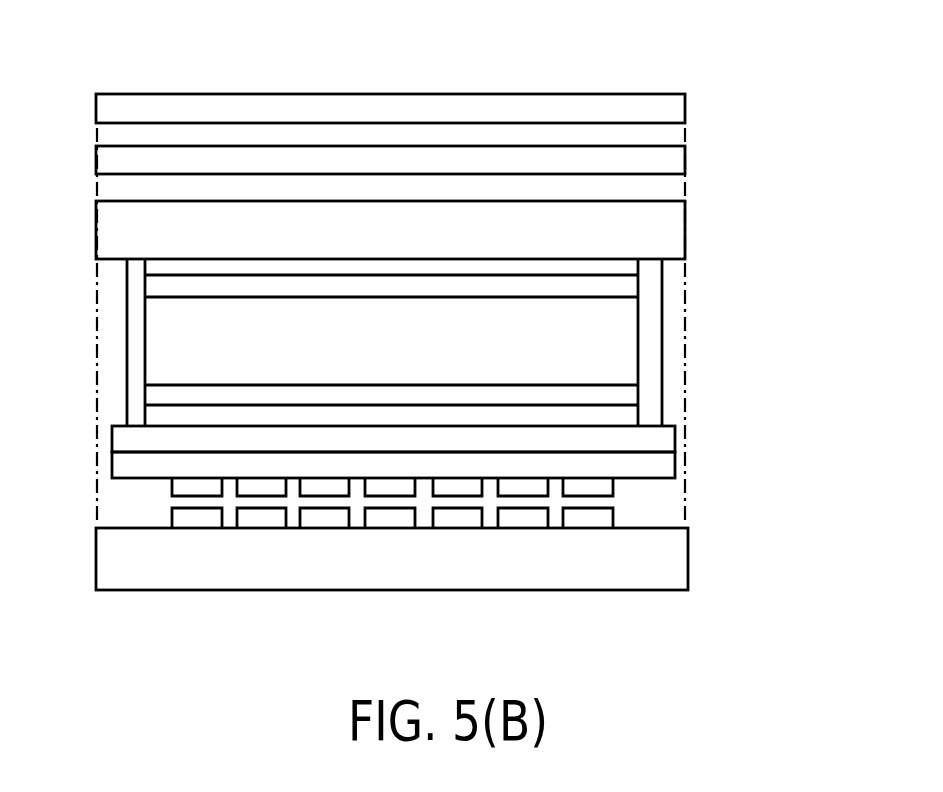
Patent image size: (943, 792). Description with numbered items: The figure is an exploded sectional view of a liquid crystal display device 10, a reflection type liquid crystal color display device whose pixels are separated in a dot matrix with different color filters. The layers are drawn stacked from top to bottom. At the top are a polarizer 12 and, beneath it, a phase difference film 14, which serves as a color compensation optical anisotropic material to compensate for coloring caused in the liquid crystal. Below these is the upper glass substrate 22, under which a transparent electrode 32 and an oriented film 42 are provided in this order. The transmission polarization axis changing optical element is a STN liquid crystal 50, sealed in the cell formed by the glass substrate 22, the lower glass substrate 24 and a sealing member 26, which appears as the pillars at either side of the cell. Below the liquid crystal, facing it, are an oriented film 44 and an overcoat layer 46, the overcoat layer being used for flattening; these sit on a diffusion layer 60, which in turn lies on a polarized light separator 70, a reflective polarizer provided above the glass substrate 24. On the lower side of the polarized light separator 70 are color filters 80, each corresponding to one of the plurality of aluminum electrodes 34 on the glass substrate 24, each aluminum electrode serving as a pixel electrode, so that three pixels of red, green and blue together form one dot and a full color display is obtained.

The liquid crystal display device 10 is at (584, 89).
The polarizer 12 is at (670, 109).
The phase difference film 14 is at (670, 165).
The glass substrate 22 is at (672, 230).
The transparent electrode 32 is at (660, 263).
The oriented film 42 is at (623, 292).
The sealing member 26 is at (652, 327).
The STN liquid crystal 50 is at (618, 358).
The oriented film 44 is at (630, 399).
The overcoat layer 46 is at (630, 419).
The diffusion layer 60 is at (662, 441).
The polarized light separator 70 is at (662, 468).
The color filters 80 is at (587, 485).
The aluminum electrodes 34 is at (607, 520).
The glass substrate 24 is at (675, 567).